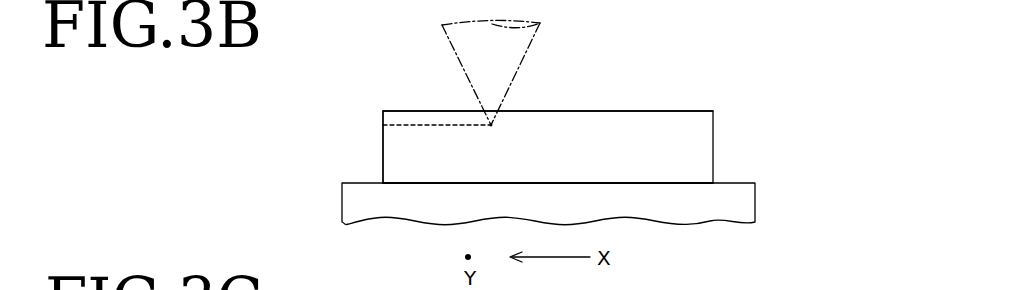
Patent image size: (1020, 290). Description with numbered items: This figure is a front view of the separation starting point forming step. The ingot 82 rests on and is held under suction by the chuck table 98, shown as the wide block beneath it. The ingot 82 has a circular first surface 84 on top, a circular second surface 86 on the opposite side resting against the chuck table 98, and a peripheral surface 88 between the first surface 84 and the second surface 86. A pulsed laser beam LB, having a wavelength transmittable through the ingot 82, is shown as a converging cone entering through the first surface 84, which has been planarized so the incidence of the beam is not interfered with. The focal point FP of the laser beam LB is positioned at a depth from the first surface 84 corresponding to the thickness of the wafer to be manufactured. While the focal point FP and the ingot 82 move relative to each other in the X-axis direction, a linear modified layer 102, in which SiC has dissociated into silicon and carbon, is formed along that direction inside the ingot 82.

The ingot 82 is at (722, 148).
The first surface 84 is at (651, 110).
The second surface 86 is at (660, 185).
The peripheral surface 88 is at (395, 146).
The chuck table 98 is at (737, 201).
The modified layer 102 is at (423, 123).
The laser beam LB is at (527, 55).
The focal point FP is at (492, 125).